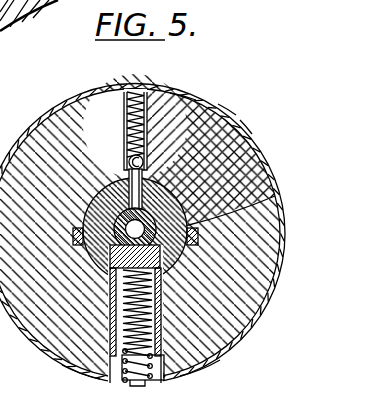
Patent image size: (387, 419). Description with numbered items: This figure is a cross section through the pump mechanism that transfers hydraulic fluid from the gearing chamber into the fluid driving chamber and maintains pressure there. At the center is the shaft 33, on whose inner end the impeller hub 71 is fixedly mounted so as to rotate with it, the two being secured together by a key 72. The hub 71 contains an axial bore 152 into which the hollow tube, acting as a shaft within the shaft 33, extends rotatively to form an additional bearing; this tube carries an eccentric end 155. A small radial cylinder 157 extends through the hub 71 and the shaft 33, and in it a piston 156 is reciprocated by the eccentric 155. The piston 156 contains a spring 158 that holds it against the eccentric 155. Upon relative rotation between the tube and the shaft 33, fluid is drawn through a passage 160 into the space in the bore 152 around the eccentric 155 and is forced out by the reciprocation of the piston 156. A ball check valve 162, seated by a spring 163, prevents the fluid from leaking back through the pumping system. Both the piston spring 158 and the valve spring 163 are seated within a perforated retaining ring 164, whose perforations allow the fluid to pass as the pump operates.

The shaft 33 is at (225, 130).
The hub 71 is at (225, 132).
The key 72 is at (199, 233).
The axial bore 152 is at (253, 148).
The eccentric end 155 is at (247, 127).
The piston 156 is at (113, 358).
The radial cylinder 157 is at (90, 378).
The spring 158 is at (112, 385).
The passage 160 is at (227, 108).
The ball check valve 162 is at (183, 95).
The spring 163 is at (142, 100).
The perforated retaining ring 164 is at (202, 368).